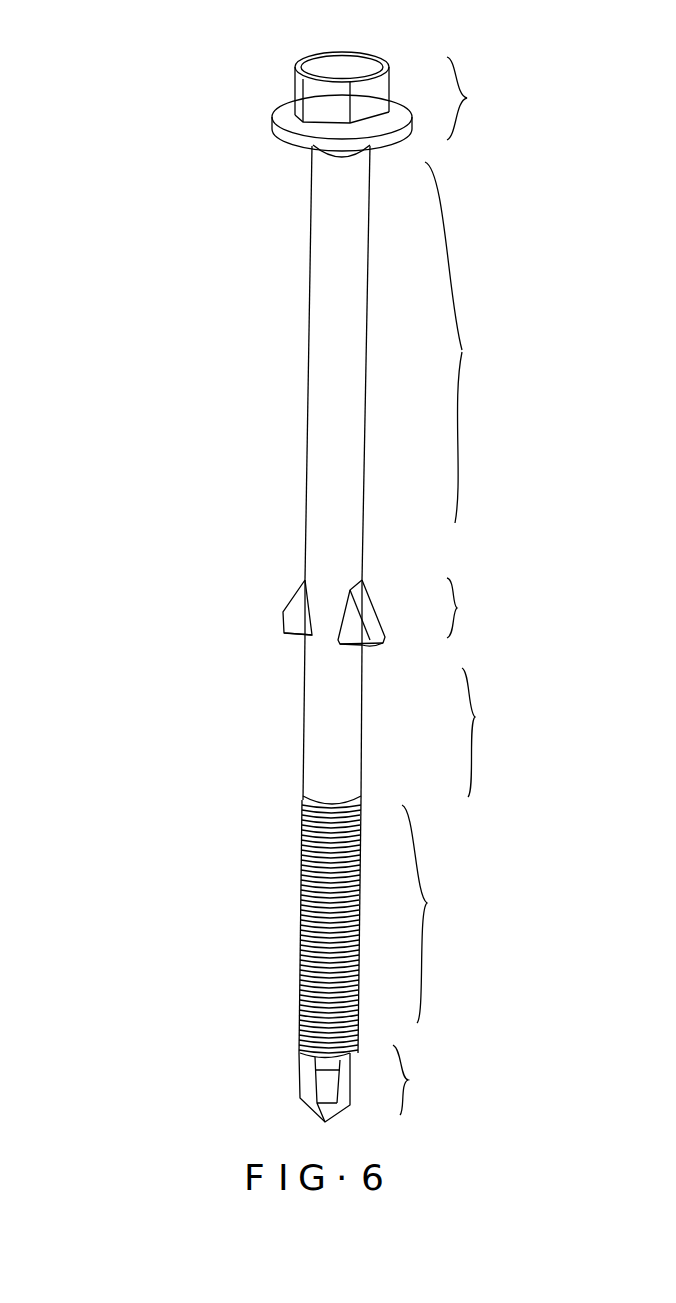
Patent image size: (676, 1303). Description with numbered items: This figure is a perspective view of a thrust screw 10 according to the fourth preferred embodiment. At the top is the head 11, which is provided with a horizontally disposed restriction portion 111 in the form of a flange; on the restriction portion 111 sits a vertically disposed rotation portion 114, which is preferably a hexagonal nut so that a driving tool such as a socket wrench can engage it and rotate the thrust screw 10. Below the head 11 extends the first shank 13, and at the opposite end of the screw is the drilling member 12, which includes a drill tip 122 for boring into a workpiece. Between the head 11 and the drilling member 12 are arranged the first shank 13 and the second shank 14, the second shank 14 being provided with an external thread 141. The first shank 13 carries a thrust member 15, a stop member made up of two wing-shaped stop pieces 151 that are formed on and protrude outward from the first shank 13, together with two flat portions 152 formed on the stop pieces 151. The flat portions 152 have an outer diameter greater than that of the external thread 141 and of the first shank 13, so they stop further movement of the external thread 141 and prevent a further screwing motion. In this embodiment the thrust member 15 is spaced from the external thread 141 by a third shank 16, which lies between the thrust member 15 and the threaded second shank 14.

The thrust screw 10 is at (309, 567).
The head 11 is at (349, 84).
The restriction portion 111 is at (278, 115).
The rotation portion 114 is at (302, 75).
The drilling member 12 is at (322, 1083).
The drill tip 122 is at (307, 1080).
The first shank 13 is at (411, 363).
The second shank 14 is at (339, 924).
The external thread 141 is at (305, 927).
The thrust member 15 is at (354, 614).
The wing-shaped stop pieces 151 is at (297, 605).
The flat portions 152 is at (297, 637).
The third shank 16 is at (415, 717).